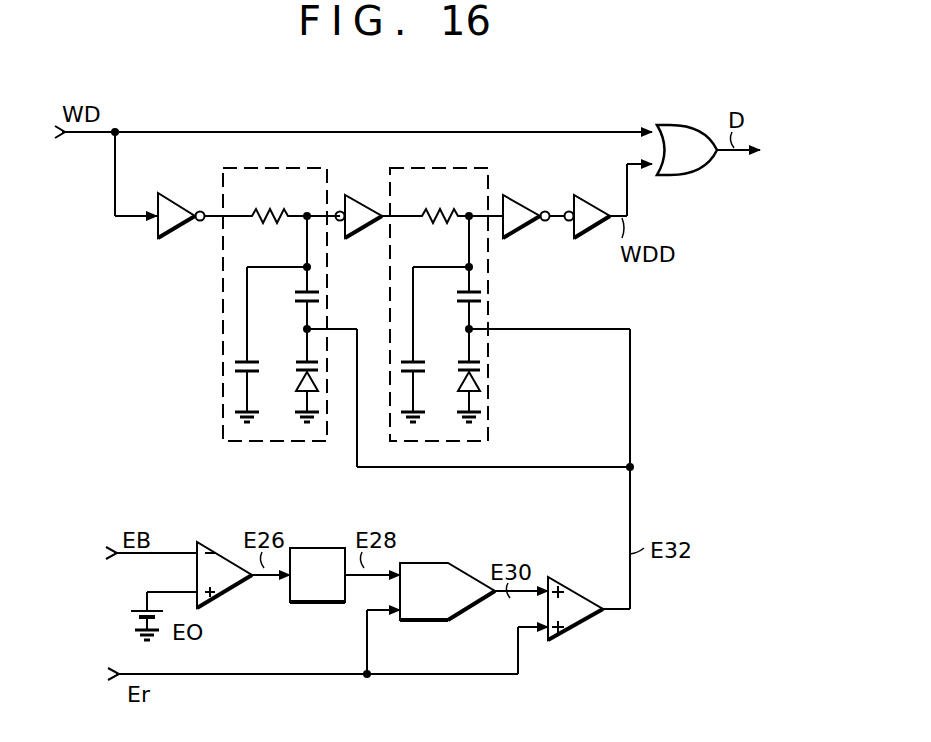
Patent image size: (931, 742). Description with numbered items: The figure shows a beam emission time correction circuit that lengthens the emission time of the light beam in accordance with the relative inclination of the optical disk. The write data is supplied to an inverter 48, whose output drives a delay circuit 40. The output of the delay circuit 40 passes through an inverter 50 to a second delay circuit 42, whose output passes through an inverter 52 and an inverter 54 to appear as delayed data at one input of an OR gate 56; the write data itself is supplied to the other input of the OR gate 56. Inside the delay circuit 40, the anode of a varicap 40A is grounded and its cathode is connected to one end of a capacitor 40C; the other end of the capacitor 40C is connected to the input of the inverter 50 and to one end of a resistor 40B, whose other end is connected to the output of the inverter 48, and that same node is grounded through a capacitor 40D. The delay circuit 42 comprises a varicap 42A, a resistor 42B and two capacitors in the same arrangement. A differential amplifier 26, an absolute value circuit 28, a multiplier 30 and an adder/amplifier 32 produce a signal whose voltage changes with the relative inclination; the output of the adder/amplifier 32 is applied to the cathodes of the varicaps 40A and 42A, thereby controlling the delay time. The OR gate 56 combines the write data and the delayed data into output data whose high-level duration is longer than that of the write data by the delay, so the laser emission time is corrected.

The differential amplifier 26 is at (224, 558).
The absolute value circuit 28 is at (310, 602).
The multiplier 30 is at (458, 582).
The adder/amplifier 32 is at (596, 602).
The delay circuit 40 is at (287, 168).
The varicap (variable capacitance diode) 40A is at (298, 380).
The resistor 40B is at (270, 210).
The capacitor 40C is at (320, 297).
The capacitor 40D is at (234, 368).
The delay circuit 42 is at (439, 168).
The varicap 42A is at (478, 382).
The resistor 42B is at (437, 210).
The inverter 48 is at (184, 206).
The inverter 50 is at (368, 206).
The inverter 52 is at (528, 206).
The inverter 54 is at (598, 206).
The OR gate 56 is at (676, 135).